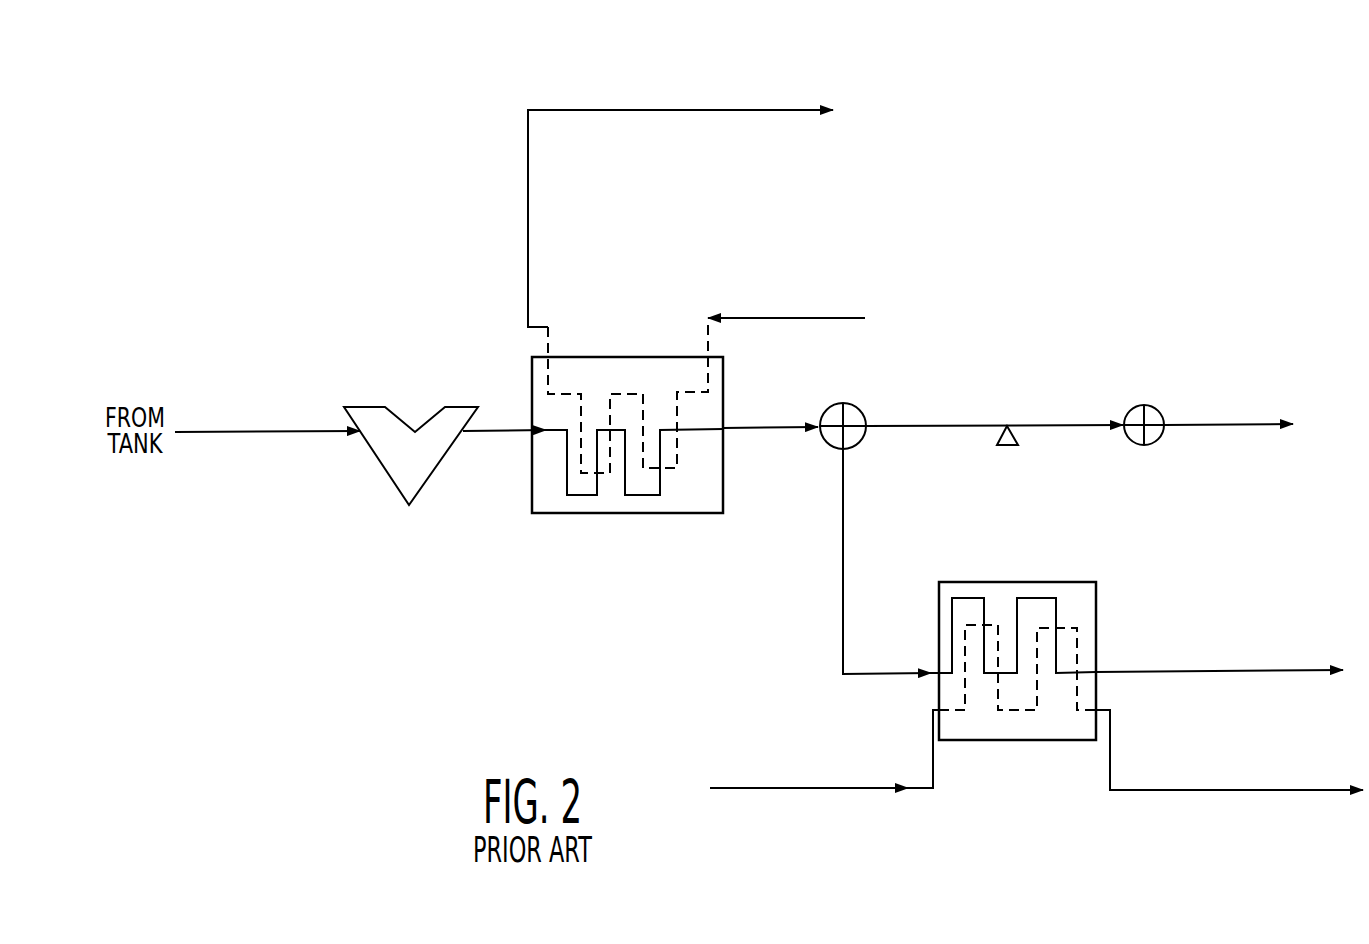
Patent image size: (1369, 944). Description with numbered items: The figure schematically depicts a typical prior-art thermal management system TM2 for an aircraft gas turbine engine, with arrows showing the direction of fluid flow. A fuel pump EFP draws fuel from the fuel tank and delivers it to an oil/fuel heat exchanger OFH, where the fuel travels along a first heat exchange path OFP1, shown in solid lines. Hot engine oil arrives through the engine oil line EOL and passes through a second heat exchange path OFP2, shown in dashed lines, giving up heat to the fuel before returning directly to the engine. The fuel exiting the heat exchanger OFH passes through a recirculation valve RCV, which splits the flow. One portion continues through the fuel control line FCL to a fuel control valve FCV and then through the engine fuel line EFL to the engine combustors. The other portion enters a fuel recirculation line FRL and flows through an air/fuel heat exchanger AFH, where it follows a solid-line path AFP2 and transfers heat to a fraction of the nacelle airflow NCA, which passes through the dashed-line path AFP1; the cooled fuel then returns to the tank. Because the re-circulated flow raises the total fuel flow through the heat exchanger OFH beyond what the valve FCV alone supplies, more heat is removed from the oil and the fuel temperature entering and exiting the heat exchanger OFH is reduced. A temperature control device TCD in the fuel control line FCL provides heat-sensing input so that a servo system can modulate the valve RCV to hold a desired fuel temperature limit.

The fuel pump EFP is at (400, 468).
The oil/fuel heat exchanger OFH is at (538, 500).
The first heat exchange path OFP1 is at (642, 495).
The second heat exchange path OFP2 is at (627, 394).
The engine oil line EOL is at (690, 110).
The thermal management system TM2 is at (948, 227).
The recirculation valve RCV is at (852, 412).
The fuel control line FCL is at (1057, 423).
The temperature control device TCD is at (1007, 445).
The fuel control valve FCV is at (1152, 405).
The engine fuel line EFL is at (1250, 420).
The fuel recirculation line FRL is at (843, 580).
The air/fuel heat exchanger AFH is at (1088, 599).
The fuel heat exchange path of air/fuel heat exchanger AFP2 is at (963, 598).
The air heat exchange path of air/fuel heat exchanger AFP1 is at (1008, 712).
The nacelle airflow NCA is at (765, 788).